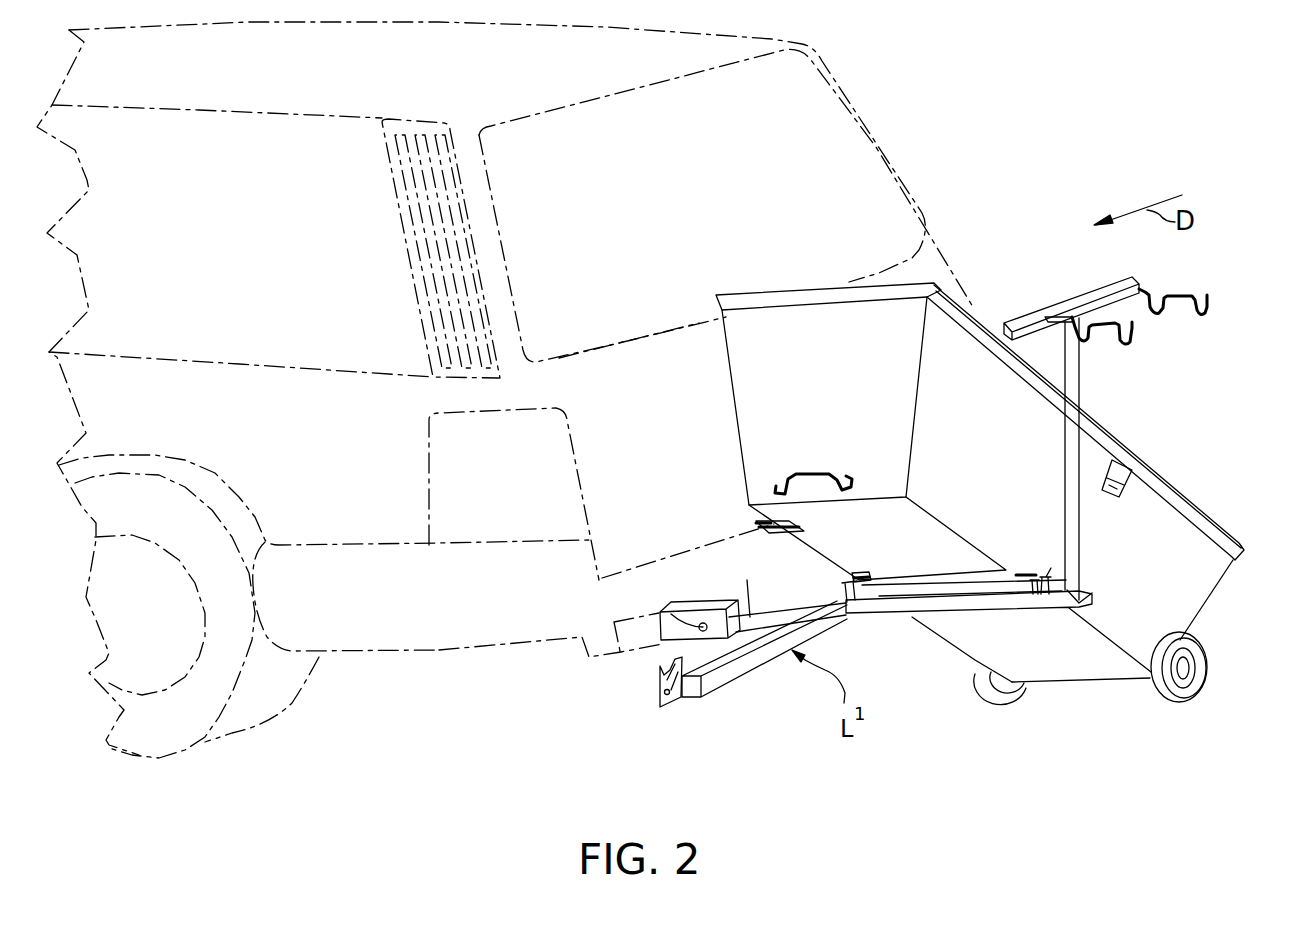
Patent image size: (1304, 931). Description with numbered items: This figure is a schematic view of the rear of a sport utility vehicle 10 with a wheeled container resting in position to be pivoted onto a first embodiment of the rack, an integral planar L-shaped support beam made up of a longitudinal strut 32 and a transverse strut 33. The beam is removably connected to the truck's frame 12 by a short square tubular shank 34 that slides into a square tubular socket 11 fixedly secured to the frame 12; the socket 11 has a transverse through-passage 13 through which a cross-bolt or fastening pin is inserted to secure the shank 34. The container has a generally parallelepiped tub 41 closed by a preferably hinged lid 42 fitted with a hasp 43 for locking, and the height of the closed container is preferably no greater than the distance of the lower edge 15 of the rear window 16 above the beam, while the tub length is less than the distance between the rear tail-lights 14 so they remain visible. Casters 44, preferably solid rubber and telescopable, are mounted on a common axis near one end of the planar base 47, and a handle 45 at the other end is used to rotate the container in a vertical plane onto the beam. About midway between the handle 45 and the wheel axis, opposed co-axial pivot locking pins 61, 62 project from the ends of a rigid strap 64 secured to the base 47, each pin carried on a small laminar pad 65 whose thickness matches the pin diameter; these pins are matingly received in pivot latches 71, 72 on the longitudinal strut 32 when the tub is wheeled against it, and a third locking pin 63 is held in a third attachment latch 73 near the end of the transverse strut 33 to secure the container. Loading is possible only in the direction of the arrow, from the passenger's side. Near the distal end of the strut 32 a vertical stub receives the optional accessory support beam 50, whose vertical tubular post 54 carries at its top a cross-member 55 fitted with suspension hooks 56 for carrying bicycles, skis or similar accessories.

The sport utility vehicle 10 is at (920, 137).
The tubular socket 11 is at (650, 655).
The frame 12 is at (597, 637).
The through-passage 13 is at (671, 612).
The rear tail-light 14 is at (430, 467).
The lower edge 15 is at (620, 343).
The rear window 16 is at (684, 177).
The longitudinal strut 32 is at (1030, 603).
The transverse strut 33 is at (756, 670).
The shank 34 is at (758, 608).
The tub 41 is at (1213, 608).
The lid 42 is at (1197, 500).
The hasp 43 is at (1123, 483).
The casters 44 is at (1023, 687).
The handle 45 is at (807, 467).
The planar base 47 is at (977, 653).
The accessory support beam 50 is at (1060, 452).
The vertical tubular post 54 is at (1097, 530).
The cross-member 55 is at (1113, 287).
The suspension hooks 56 is at (1131, 343).
The pivot locking pin 61 is at (1033, 577).
The pivot locking pin 62 is at (847, 580).
The third locking pin 63 is at (757, 527).
The rigid strap 64 is at (956, 577).
The pad 65 is at (803, 530).
The pivot latch 71 is at (1045, 577).
The pivot latch 72 is at (860, 607).
The attachment latch 73 is at (665, 708).